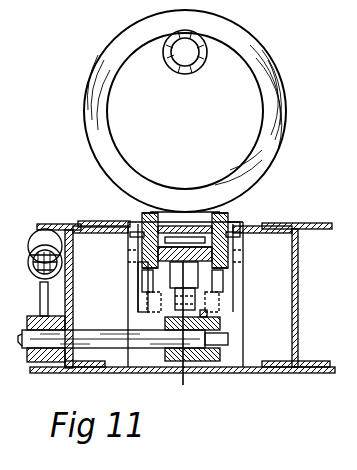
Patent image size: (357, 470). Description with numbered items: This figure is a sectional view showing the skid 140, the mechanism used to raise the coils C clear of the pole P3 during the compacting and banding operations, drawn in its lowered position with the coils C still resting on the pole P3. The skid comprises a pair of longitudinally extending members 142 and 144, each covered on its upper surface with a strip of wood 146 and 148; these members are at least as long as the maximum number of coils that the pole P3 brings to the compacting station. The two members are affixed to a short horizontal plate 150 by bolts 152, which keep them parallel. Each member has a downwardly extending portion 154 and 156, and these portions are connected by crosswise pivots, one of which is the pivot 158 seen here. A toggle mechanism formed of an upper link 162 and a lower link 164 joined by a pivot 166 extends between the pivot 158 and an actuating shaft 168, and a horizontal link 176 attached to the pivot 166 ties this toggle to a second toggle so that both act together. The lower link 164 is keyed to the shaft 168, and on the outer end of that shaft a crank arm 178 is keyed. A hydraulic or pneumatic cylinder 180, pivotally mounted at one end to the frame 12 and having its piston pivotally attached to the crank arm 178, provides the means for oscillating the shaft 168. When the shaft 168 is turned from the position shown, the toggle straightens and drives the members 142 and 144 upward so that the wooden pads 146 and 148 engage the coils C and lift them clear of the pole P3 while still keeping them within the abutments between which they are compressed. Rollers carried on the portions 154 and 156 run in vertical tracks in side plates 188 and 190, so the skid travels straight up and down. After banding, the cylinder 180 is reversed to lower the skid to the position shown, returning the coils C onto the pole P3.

The coils C is at (287, 74).
The pole P3 is at (192, 74).
The frame 12 is at (62, 224).
The skid 140 is at (254, 206).
The longitudinally extending member 142 is at (232, 224).
The longitudinally extending member 144 is at (142, 225).
The strip of wood 146 is at (224, 226).
The strip of wood 148 is at (163, 232).
The horizontal plate 150 is at (181, 236).
The bolts 152 is at (130, 234).
The downwardly extending portion 154 is at (226, 265).
The downwardly extending portion 156 is at (139, 274).
The crosswise pivot 158 is at (228, 253).
The upper link 162 is at (151, 287).
The lower link 164 is at (150, 300).
The pivot 166 is at (208, 312).
The actuating shaft 168 is at (128, 342).
The horizontal link 176 is at (184, 331).
The crank arm 178 is at (42, 308).
The hydraulic or pneumatic cylinder 180 is at (35, 236).
The side plate 188 is at (214, 300).
The side plate 190 is at (128, 263).